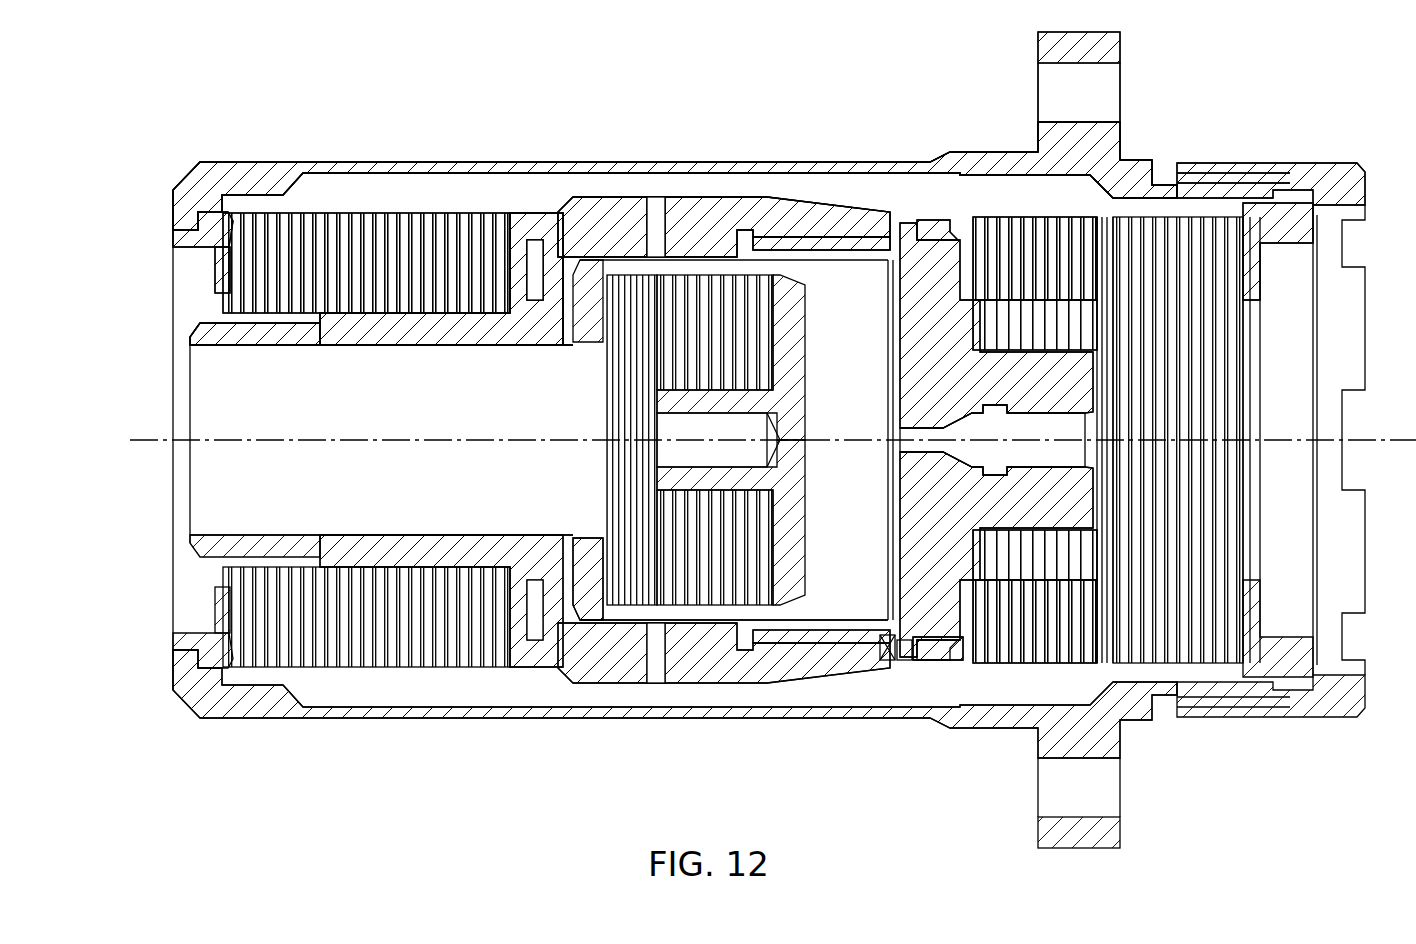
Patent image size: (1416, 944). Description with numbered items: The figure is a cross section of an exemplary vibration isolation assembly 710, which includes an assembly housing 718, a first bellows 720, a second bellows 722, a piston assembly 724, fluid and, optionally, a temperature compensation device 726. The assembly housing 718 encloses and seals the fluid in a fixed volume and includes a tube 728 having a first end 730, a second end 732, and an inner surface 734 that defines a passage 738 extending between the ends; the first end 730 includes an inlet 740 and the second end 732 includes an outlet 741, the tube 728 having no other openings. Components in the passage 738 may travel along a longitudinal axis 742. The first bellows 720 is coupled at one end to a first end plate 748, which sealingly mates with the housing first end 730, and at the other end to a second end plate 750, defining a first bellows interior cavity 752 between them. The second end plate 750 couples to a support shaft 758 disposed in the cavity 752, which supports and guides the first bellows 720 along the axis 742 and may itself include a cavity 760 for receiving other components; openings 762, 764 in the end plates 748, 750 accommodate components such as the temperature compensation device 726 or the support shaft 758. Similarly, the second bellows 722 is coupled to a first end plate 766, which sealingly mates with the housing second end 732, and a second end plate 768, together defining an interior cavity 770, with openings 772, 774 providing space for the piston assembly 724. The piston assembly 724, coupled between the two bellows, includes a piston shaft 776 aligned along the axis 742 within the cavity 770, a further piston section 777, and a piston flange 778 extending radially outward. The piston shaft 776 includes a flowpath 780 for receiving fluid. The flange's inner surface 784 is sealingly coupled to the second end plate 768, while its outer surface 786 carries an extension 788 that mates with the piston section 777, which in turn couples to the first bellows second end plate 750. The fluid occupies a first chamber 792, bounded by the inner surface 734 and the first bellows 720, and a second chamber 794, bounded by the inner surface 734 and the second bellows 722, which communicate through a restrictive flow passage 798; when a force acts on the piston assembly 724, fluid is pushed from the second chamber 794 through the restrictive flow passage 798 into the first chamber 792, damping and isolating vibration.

The isolation assembly 710 is at (675, 127).
The assembly housing 718 is at (238, 162).
The first bellows 720 is at (340, 213).
The second bellows 722 is at (1051, 116).
The piston assembly 724 is at (996, 554).
The temperature compensation device 726 is at (712, 645).
The tube 728 is at (443, 705).
The first end 730 is at (185, 198).
The second end 732 is at (1290, 182).
The inner surface 734 is at (400, 185).
The passage 738 is at (724, 177).
The inlet 740 is at (317, 335).
The outlet 741 is at (1340, 440).
The longitudinal axis 742 is at (345, 447).
The first end plate 748 is at (195, 240).
The second end plate 750 is at (540, 213).
The first bellows interior cavity 752 is at (307, 309).
The support shaft 758 is at (252, 342).
The cavity 760 is at (451, 412).
The opening 762 is at (161, 272).
The opening 764 is at (518, 300).
The first end plate 766 is at (1290, 232).
The second end plate 768 is at (930, 215).
The interior cavity 770 is at (1106, 309).
The opening 772 is at (1304, 440).
The opening 774 is at (945, 578).
The piston shaft 776 is at (1092, 512).
The piston section 777 is at (692, 215).
The piston flange 778 is at (905, 650).
The flowpath 780 is at (1043, 415).
The inner surface 784 is at (963, 702).
The outer surface 786 is at (841, 697).
The extension 788 is at (822, 625).
The first chamber 792 is at (433, 701).
The second chamber 794 is at (1058, 696).
The restrictive flow passage 798 is at (724, 709).